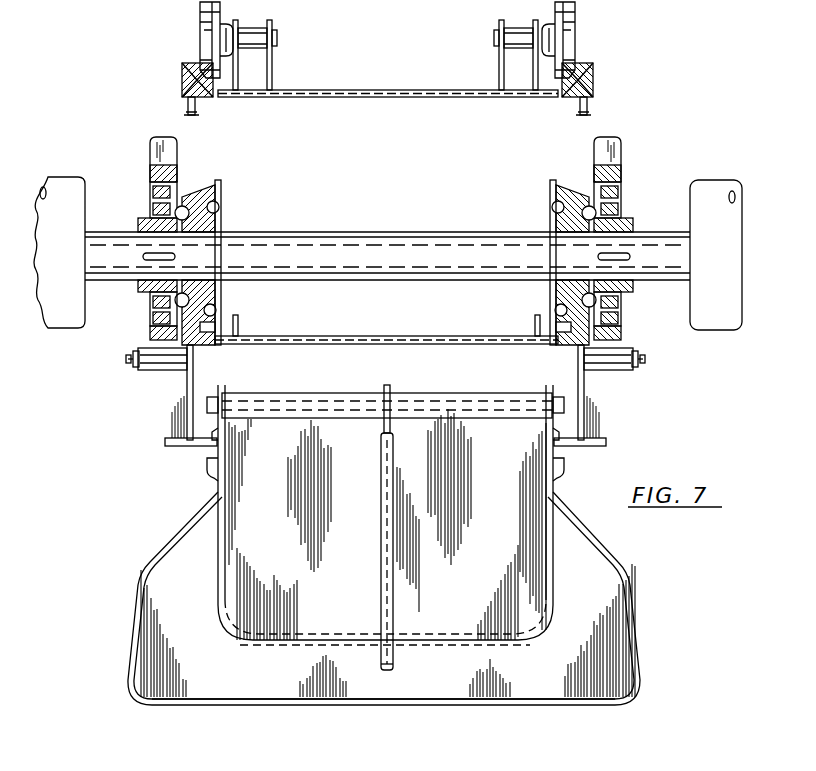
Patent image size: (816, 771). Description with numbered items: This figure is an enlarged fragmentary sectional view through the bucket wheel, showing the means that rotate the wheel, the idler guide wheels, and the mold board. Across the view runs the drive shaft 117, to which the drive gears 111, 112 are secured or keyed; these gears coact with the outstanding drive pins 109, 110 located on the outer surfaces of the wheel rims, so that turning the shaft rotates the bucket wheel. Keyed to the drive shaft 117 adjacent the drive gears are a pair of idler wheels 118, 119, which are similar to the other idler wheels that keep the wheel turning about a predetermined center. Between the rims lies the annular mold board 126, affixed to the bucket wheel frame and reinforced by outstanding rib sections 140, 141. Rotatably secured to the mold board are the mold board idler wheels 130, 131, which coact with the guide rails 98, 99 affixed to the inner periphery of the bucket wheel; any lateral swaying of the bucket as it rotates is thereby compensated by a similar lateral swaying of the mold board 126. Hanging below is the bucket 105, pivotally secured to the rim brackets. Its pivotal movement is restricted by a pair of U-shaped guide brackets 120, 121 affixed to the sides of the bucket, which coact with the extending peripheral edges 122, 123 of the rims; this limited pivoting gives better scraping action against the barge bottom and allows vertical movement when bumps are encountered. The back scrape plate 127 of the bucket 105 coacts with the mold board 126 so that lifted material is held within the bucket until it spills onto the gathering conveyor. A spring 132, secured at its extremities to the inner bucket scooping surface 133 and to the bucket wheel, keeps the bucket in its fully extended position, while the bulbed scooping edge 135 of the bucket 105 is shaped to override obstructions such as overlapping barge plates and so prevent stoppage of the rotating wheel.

The guide rail 98 is at (591, 71).
The guide rail 99 is at (185, 88).
The bucket 105 is at (639, 612).
The drive pin 109 is at (620, 350).
The drive pin 110 is at (160, 356).
The drive gear 111 is at (620, 166).
The drive gear 112 is at (178, 156).
The drive shaft 117 is at (649, 231).
The idler wheel 118 is at (563, 190).
The idler wheel 119 is at (217, 185).
The U-shaped guide bracket 120 is at (568, 478).
The U-shaped guide bracket 121 is at (207, 482).
The extending peripheral edge 122 is at (607, 443).
The extending peripheral edge 123 is at (190, 448).
The mold board 126 is at (396, 90).
The scrape plate 127 is at (385, 502).
The mold board idler wheel 130 is at (572, 40).
The mold board idler wheel 131 is at (205, 31).
The spring 132 is at (382, 588).
The inner bucket scooping surface 133 is at (419, 668).
The bulbed scooping edge 135 is at (323, 708).
The rib section 140 is at (538, 322).
The rib section 141 is at (238, 322).